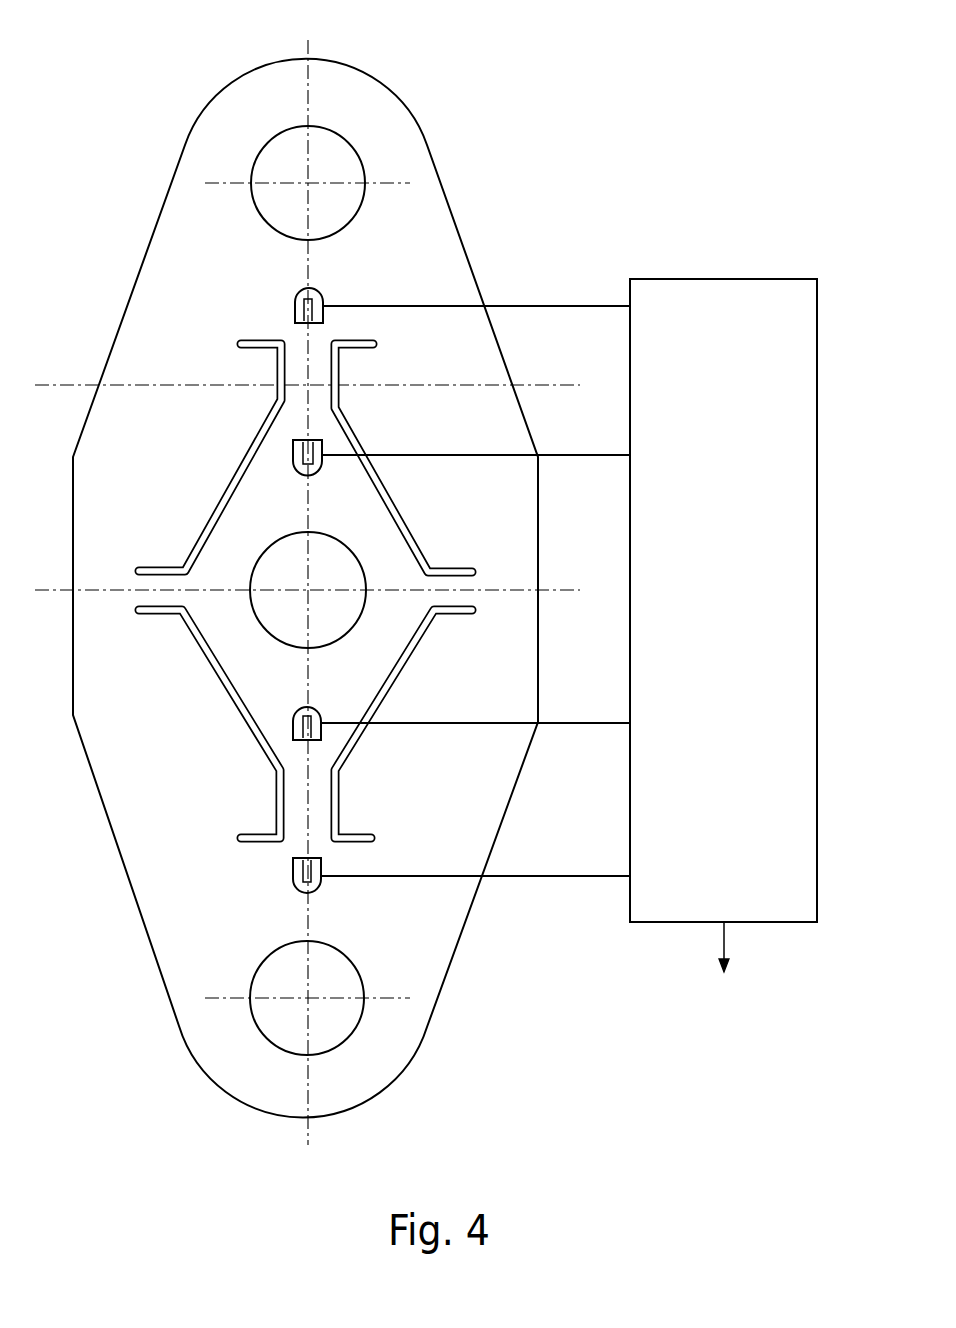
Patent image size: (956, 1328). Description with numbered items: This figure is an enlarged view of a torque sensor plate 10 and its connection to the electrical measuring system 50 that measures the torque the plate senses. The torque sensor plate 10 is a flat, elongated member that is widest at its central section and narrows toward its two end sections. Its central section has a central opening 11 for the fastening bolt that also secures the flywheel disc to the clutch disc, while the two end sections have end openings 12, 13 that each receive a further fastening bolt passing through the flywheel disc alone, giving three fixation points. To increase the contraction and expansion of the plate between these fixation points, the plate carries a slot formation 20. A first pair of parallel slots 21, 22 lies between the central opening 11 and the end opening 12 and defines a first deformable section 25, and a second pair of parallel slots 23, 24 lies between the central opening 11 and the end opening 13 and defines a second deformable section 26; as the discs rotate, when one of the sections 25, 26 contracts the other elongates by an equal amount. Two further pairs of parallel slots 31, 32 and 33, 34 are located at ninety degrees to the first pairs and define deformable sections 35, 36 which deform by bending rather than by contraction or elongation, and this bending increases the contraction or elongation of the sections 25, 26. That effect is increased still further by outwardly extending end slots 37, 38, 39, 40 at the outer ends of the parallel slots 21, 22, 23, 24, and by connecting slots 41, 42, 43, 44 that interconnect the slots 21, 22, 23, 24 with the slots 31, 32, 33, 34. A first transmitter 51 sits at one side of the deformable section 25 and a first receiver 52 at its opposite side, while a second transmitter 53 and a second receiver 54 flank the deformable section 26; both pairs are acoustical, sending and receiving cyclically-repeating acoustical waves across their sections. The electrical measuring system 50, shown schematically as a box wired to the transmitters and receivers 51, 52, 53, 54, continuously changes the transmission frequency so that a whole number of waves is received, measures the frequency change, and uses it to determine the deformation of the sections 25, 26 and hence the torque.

The torque sensor plate 10 is at (430, 92).
The central opening 11 is at (333, 548).
The end opening 12 is at (343, 160).
The end opening 13 is at (343, 978).
The slot formation 20 is at (226, 493).
The parallel slot 21 is at (278, 398).
The parallel slot 22 is at (340, 396).
The parallel slot 23 is at (273, 808).
The parallel slot 24 is at (340, 807).
The first deformable section 25 is at (331, 367).
The second deformable section 26 is at (307, 784).
The parallel slot 31 is at (157, 613).
The parallel slot 32 is at (156, 566).
The parallel slot 33 is at (456, 612).
The parallel slot 34 is at (453, 566).
The deformable section 35 is at (172, 613).
The deformable section 36 is at (440, 573).
The end slot 37 is at (251, 341).
The end slot 38 is at (363, 343).
The end slot 39 is at (241, 840).
The end slot 40 is at (373, 840).
The connecting slot 41 is at (262, 449).
The connecting slot 42 is at (350, 441).
The connecting slot 43 is at (238, 693).
The connecting slot 44 is at (405, 650).
The electrical measuring system 50 is at (722, 279).
The first transmitter 51 is at (295, 311).
The first receiver 52 is at (298, 476).
The second transmitter 53 is at (296, 713).
The second receiver 54 is at (297, 885).